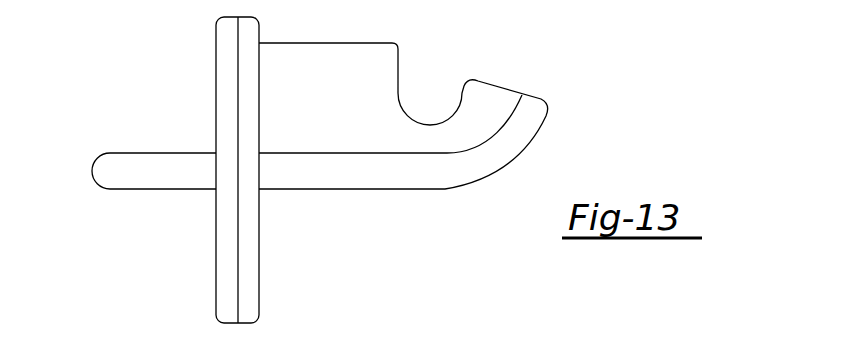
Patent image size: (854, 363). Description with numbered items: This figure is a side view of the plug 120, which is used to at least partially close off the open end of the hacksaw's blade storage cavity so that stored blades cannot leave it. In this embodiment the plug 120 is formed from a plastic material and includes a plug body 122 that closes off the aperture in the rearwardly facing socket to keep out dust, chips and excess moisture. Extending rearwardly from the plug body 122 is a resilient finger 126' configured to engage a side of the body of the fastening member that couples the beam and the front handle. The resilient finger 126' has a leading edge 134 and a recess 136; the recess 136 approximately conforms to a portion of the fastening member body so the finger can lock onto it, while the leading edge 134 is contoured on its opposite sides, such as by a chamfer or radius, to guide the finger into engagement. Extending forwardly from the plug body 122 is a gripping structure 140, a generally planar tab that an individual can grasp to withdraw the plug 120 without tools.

The plug 120 is at (337, 170).
The plug body 122 is at (222, 245).
The resilient finger 126' is at (403, 150).
The leading edge 134 is at (556, 132).
The recess 136 is at (432, 107).
The gripping structure 140 is at (100, 172).